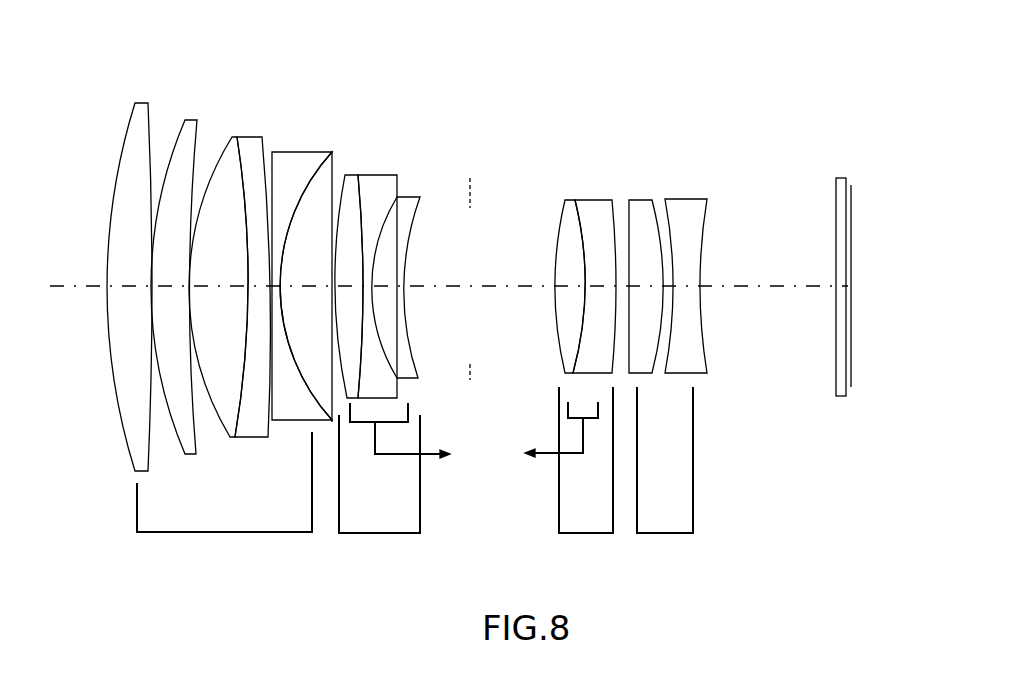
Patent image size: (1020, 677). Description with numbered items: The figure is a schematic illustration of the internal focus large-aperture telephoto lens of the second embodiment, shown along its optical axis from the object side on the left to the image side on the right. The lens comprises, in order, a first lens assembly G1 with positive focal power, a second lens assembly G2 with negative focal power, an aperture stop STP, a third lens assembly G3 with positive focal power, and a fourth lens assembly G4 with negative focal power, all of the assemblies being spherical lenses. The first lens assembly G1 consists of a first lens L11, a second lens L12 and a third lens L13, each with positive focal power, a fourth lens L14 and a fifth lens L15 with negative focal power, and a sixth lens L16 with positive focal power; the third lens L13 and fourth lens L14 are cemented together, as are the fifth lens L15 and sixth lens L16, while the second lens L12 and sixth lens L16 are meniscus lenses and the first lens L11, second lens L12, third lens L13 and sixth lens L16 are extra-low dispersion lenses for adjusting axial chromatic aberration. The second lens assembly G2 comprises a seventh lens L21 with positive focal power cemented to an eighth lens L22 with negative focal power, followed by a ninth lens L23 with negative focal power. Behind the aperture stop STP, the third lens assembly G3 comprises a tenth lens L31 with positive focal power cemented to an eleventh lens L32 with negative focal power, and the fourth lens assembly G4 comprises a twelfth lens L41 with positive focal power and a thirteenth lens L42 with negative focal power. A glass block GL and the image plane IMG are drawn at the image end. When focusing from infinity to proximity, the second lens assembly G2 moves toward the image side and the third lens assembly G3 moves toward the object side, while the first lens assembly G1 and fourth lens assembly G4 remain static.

The first lens L11 is at (128, 123).
The second lens L12 is at (192, 118).
The third lens L13 is at (235, 135).
The fourth lens L14 is at (262, 135).
The fifth lens L15 is at (303, 150).
The sixth lens L16 is at (330, 150).
The seventh lens L21 is at (355, 175).
The eighth lens L22 is at (382, 175).
The ninth lens L23 is at (412, 195).
The aperture stop STP is at (470, 178).
The tenth lens L31 is at (568, 197).
The eleventh lens L32 is at (597, 197).
The twelfth lens L41 is at (650, 197).
The thirteenth lens L42 is at (695, 197).
The glass block / cover glass GL is at (832, 190).
The image plane IMG is at (853, 187).
The first lens assembly G1 is at (225, 532).
The second lens assembly G2 is at (379, 533).
The third lens assembly G3 is at (586, 533).
The fourth lens assembly G4 is at (665, 533).